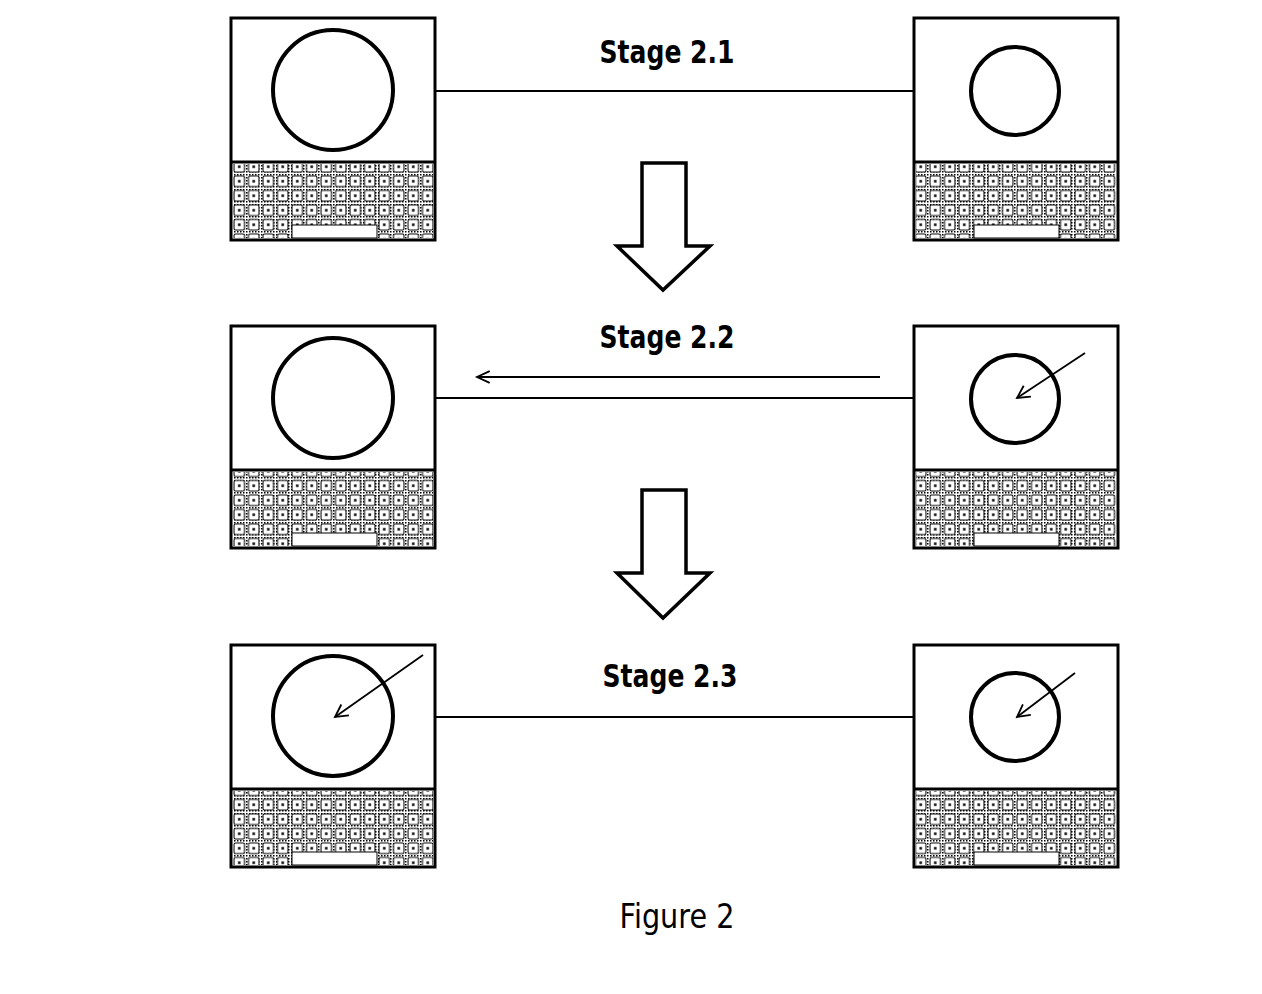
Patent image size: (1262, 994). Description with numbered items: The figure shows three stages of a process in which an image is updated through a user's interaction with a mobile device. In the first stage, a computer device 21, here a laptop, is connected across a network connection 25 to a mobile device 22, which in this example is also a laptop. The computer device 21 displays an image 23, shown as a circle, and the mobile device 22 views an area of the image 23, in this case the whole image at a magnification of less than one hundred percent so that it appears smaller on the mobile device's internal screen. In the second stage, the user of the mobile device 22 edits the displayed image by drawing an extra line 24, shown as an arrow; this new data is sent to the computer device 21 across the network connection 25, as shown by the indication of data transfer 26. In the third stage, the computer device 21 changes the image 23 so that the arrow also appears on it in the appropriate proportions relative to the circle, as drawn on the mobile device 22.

The computer device 21 is at (230, 93).
The mobile device 22 is at (1118, 93).
The image 23 is at (393, 93).
The extra line 24 is at (1060, 370).
The network connection 25 is at (763, 91).
The indication of data transfer 26 is at (738, 377).